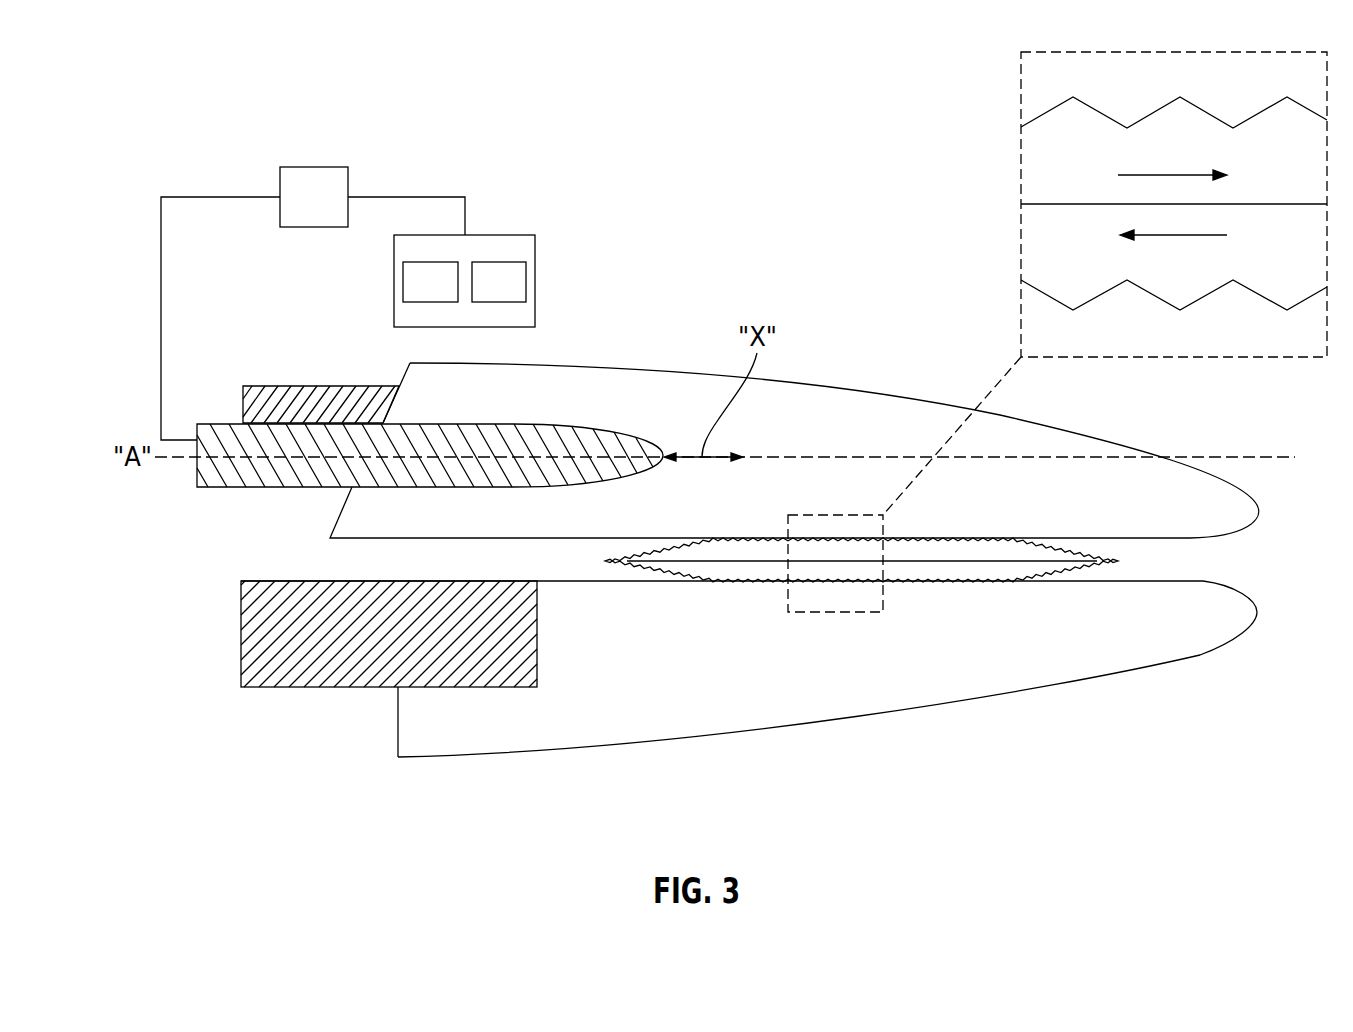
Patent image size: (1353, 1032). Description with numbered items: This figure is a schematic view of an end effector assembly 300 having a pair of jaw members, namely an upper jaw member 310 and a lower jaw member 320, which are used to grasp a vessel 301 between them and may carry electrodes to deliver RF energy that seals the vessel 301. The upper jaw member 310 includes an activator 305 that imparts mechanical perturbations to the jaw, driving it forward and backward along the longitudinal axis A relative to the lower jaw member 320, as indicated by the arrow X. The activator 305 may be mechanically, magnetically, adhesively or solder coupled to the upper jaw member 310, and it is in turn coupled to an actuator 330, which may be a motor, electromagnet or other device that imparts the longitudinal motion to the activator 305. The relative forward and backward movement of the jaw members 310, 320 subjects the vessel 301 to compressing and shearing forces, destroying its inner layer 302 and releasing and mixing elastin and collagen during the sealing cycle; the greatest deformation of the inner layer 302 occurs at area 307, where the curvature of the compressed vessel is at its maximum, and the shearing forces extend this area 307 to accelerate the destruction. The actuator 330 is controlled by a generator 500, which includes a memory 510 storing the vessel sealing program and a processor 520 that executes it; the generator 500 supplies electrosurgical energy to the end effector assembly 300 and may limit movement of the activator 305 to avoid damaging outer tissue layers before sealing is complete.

The end effector assembly 300 is at (476, 96).
The actuator 330 is at (333, 211).
The generator 500 is at (530, 282).
The memory 510 is at (521, 297).
The processor 520 is at (453, 297).
The activator 305 is at (215, 430).
The upper jaw member 310 is at (810, 402).
The lower jaw member 320 is at (855, 705).
The vessel 301 is at (1118, 562).
The inner layer 302 is at (937, 561).
The area of maximum curvature 307 is at (627, 565).